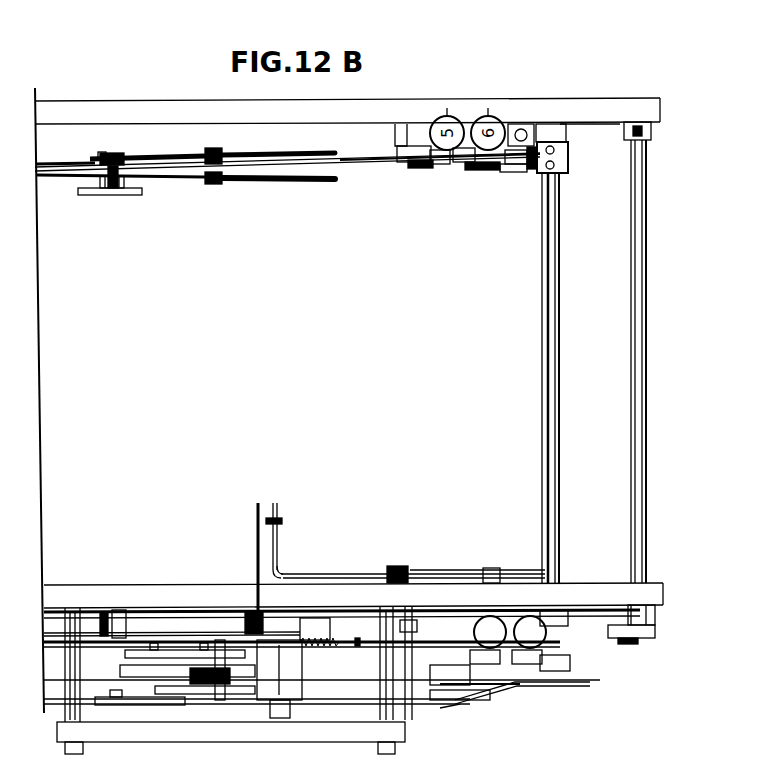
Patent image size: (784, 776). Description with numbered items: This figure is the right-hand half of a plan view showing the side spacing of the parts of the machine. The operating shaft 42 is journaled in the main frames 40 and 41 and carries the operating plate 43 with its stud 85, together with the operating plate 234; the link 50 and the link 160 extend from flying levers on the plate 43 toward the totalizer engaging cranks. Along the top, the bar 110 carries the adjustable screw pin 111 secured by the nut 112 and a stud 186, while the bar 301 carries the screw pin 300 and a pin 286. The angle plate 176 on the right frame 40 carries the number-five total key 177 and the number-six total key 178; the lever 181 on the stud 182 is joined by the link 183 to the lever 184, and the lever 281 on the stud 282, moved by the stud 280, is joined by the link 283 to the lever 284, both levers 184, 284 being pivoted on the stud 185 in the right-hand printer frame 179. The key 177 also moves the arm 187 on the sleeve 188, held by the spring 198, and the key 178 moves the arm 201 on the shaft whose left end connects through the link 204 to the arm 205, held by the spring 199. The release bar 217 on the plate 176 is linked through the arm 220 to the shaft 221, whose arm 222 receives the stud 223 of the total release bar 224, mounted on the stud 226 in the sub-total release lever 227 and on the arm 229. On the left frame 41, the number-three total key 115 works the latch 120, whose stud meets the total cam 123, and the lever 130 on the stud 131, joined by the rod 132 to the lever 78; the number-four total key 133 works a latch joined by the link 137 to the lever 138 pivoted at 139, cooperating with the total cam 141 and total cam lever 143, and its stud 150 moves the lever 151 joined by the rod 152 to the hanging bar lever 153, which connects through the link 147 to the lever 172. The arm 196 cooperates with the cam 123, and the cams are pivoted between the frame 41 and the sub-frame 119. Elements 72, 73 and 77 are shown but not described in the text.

The main frame 40 is at (340, 102).
The main frame 41 is at (166, 588).
The operating shaft 42 is at (274, 712).
The operating plate 43 is at (161, 698).
The link 50 is at (128, 671).
The drive shaft 72 is at (192, 614).
The support bracket 73 is at (116, 636).
The lever 77 is at (250, 650).
The lever 78 is at (278, 508).
The stud 85 is at (216, 652).
The bar 110 is at (163, 158).
The adjustable screw pin 111 is at (286, 153).
The nut 112 is at (209, 154).
The No. 3 total key 115 is at (544, 626).
The sub-frame 119 is at (222, 740).
The latch 120 is at (514, 620).
The total cam 123 is at (478, 685).
The lever 130 is at (339, 574).
The stud 131 is at (392, 568).
The rod 132 is at (282, 522).
The No. 4 total key 133 is at (490, 616).
The link 137 is at (455, 670).
The lever 138 is at (482, 706).
The pivot 139 is at (410, 616).
The total cam 141 is at (399, 714).
The total cam lever 143 is at (222, 701).
The link 147 is at (246, 624).
The stud 150 is at (486, 571).
The lever 151 is at (468, 576).
The rod 152 is at (260, 581).
The hanging bar lever 153 is at (256, 516).
The link 160 is at (93, 708).
The lever 172 is at (112, 614).
The angle plate 176 is at (401, 124).
The No. 5 total key 177 is at (448, 112).
The No. 6 total key 178 is at (504, 92).
The right-hand printer frame 179 is at (85, 198).
The lever 181 is at (432, 169).
The stud 182 is at (418, 168).
The link 183 is at (352, 138).
The lever 184 is at (124, 177).
The stud 185 is at (122, 157).
The stud 186 is at (104, 156).
The arm 187 is at (516, 164).
The sleeve 188 is at (555, 238).
The arm 196 is at (570, 665).
The spring 198 is at (535, 174).
The spring 199 is at (540, 128).
The arm 201 is at (534, 126).
The link 204 is at (520, 701).
The arm 205 is at (454, 708).
The release bar 217 is at (574, 128).
The arm 220 is at (656, 134).
The shaft 221 is at (644, 222).
The arm 222 is at (650, 640).
The stud 223 is at (629, 644).
The total release bar 224 is at (358, 646).
The stud 226 is at (312, 646).
The sub-total release lever 227 is at (326, 640).
The arm 229 is at (656, 618).
The operating plate 234 is at (178, 657).
The stud 280 is at (504, 172).
The lever 281 is at (480, 174).
The stud 282 is at (470, 166).
The link 283 is at (366, 166).
The lever 284 is at (125, 191).
The pin 286 is at (86, 164).
The screw pin 300 is at (300, 181).
The bar 301 is at (50, 178).